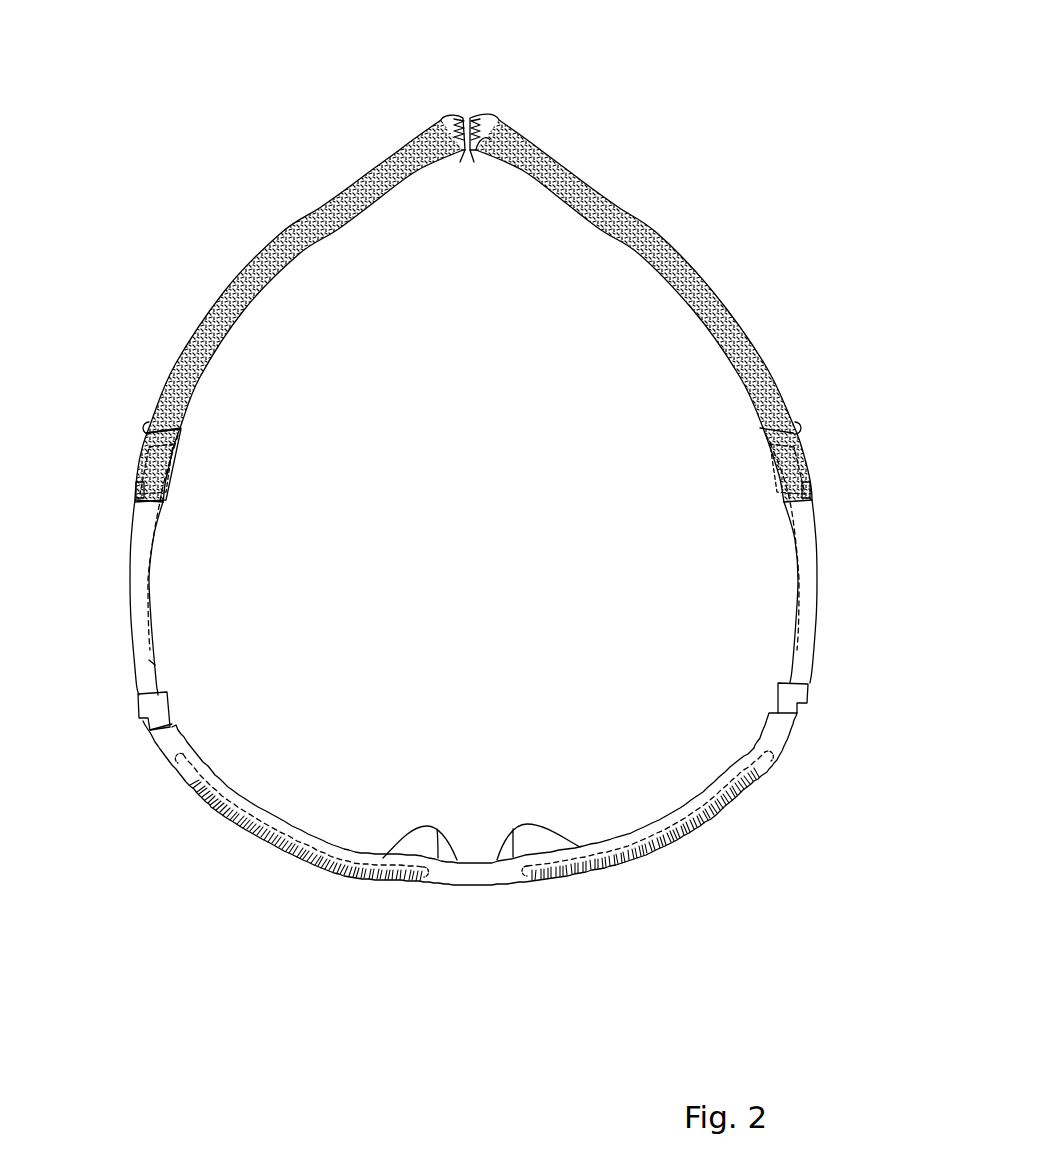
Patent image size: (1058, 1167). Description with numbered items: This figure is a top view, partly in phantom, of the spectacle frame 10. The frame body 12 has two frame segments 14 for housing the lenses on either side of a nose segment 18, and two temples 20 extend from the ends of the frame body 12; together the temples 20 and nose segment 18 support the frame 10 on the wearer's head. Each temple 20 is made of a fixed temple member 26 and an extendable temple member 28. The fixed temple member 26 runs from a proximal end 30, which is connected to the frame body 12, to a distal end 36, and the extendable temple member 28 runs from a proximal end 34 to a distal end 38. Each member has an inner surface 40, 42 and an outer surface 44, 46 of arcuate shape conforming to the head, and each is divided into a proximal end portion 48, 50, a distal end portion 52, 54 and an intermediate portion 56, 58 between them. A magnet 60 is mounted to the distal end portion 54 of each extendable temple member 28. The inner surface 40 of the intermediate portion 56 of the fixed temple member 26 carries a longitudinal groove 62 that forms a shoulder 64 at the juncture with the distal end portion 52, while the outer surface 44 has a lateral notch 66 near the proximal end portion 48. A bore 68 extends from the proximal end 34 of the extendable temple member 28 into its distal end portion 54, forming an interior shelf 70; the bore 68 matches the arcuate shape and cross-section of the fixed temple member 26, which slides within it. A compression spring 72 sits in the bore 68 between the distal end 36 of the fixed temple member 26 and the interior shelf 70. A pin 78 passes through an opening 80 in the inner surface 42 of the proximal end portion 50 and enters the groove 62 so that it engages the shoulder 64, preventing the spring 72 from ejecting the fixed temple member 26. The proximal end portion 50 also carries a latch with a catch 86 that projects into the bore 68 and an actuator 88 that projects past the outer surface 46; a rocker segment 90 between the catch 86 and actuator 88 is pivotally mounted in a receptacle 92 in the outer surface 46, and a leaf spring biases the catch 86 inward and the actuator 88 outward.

The spectacle frame 10 is at (665, 85).
The frame body 12 is at (782, 760).
The frame segment 14 is at (655, 815).
The nose segment 18 is at (485, 887).
The temple 20 is at (465, 565).
The fixed temple member 26 is at (817, 565).
The extendable temple member 28 is at (662, 235).
The proximal end of fixed temple member 30 is at (172, 727).
The proximal end of extendable temple member 34 is at (164, 500).
The distal end of fixed temple member 36 is at (174, 432).
The distal end of extendable temple member 38 is at (463, 160).
The inner surface of fixed temple member 40 is at (153, 662).
The inner surface of extendable temple member 42 is at (245, 315).
The outer surface of fixed temple member 44 is at (132, 665).
The outer surface of extendable temple member 46 is at (223, 293).
The proximal end portion of fixed temple member 48 is at (167, 700).
The proximal end portion of extendable temple member 50 is at (171, 478).
The distal end portion of fixed temple member 52 is at (152, 470).
The distal end portion of extendable temple member 54 is at (441, 135).
The intermediate portion of fixed temple member 56 is at (133, 570).
The intermediate portion of extendable temple member 58 is at (281, 233).
The magnet 60 is at (458, 118).
The groove 62 is at (797, 605).
The shoulder 64 is at (173, 458).
The notch 66 is at (808, 665).
The bore 68 is at (754, 357).
The interior shelf 70 is at (492, 140).
The compression spring 72 is at (698, 284).
The pin 78 is at (765, 450).
The opening 80 is at (772, 460).
The catch 86 is at (810, 490).
The actuator 88 is at (801, 418).
The rocker segment 90 is at (806, 440).
The receptacle 92 is at (144, 442).